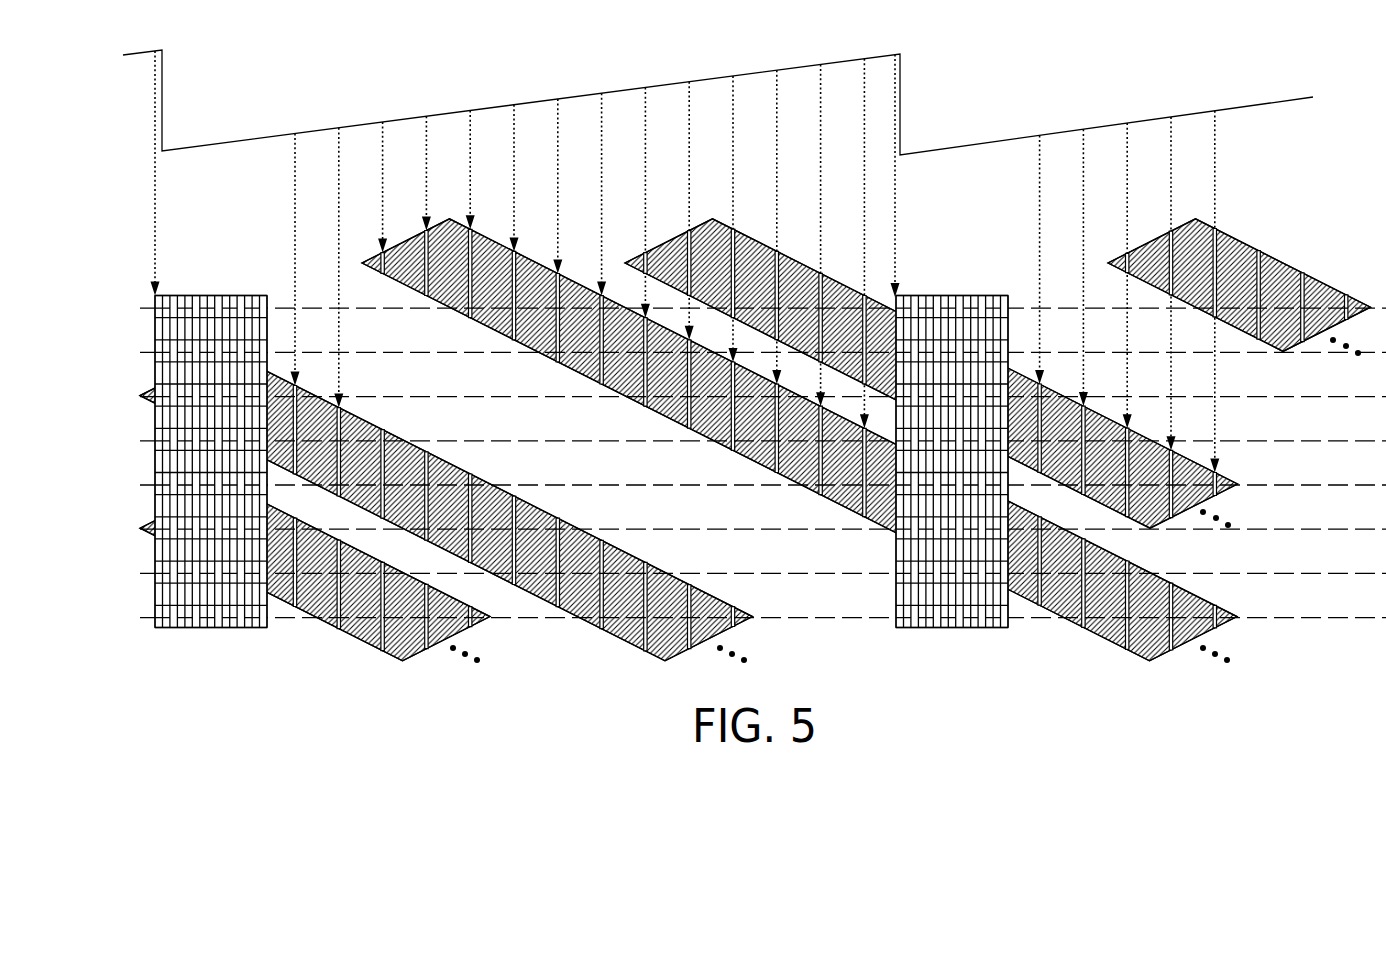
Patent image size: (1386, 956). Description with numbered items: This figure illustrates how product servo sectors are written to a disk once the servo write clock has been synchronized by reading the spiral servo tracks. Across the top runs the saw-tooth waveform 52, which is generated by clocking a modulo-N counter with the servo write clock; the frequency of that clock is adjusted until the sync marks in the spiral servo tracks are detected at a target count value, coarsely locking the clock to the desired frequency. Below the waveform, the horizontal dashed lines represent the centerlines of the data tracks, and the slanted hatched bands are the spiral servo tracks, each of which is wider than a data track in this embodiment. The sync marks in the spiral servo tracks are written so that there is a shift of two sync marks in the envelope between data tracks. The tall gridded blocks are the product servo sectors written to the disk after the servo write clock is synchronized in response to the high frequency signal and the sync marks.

The saw-tooth waveform 52 is at (575, 95).